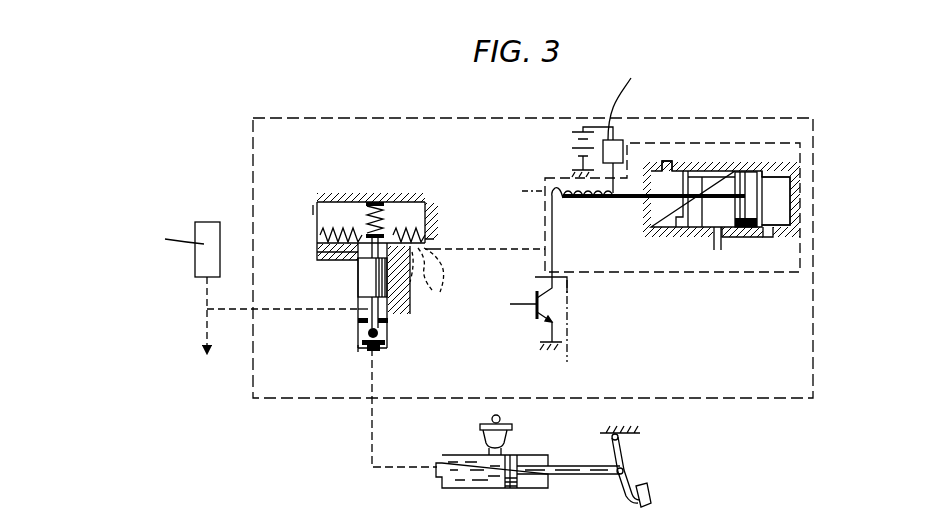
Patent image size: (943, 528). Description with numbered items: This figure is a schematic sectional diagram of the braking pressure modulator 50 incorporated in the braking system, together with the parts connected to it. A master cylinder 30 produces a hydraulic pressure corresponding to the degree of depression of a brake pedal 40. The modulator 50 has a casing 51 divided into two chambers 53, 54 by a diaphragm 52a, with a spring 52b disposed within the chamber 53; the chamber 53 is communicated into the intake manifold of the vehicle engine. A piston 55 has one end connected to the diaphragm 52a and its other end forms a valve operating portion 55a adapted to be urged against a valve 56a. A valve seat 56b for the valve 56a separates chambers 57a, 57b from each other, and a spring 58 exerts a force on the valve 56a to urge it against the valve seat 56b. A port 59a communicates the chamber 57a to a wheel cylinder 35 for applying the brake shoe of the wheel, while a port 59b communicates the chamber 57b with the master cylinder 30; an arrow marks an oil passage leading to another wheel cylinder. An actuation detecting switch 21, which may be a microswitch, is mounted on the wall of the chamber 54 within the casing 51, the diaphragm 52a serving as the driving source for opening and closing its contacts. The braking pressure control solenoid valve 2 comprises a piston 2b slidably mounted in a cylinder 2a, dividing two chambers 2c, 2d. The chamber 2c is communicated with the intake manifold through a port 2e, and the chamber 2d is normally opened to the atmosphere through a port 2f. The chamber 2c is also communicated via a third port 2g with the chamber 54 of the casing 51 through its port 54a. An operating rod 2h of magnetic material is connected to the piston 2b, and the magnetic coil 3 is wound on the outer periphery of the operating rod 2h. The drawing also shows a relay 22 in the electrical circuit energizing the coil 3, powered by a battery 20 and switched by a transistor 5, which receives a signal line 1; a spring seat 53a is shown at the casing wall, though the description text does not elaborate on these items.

The signal line 1 is at (571, 340).
The braking pressure control solenoid valve 2 is at (674, 272).
The cylinder 2a is at (720, 171).
The piston 2b is at (726, 236).
The chamber 2c is at (695, 178).
The chamber 2d is at (780, 180).
The port 2e is at (665, 162).
The port 2f is at (771, 237).
The third port 2g is at (718, 252).
The operating rod 2h is at (638, 199).
The magnetic coil 3 is at (600, 201).
The transistor 5 is at (548, 302).
The battery 20 is at (570, 145).
The actuation detecting switch 21 is at (420, 248).
The relay 22 is at (618, 140).
The master cylinder 30 is at (543, 455).
The wheel cylinder 35 is at (212, 222).
The brake pedal 40 is at (630, 453).
The braking pressure modulator 50 is at (366, 118).
The casing 51 is at (430, 214).
The diaphragm 52a is at (355, 219).
The spring 52b is at (399, 201).
The chamber 53 is at (316, 222).
The spring seat 53a is at (316, 212).
The chamber 54 is at (325, 253).
The port 54a is at (435, 248).
The piston 55 is at (358, 280).
The valve operating portion 55a is at (390, 319).
The valve 56a is at (380, 337).
The valve seat 56b is at (362, 340).
The chamber 57a is at (357, 308).
The chamber 57b is at (360, 352).
The spring 58 is at (388, 353).
The port 59a is at (357, 321).
The port 59b is at (370, 366).